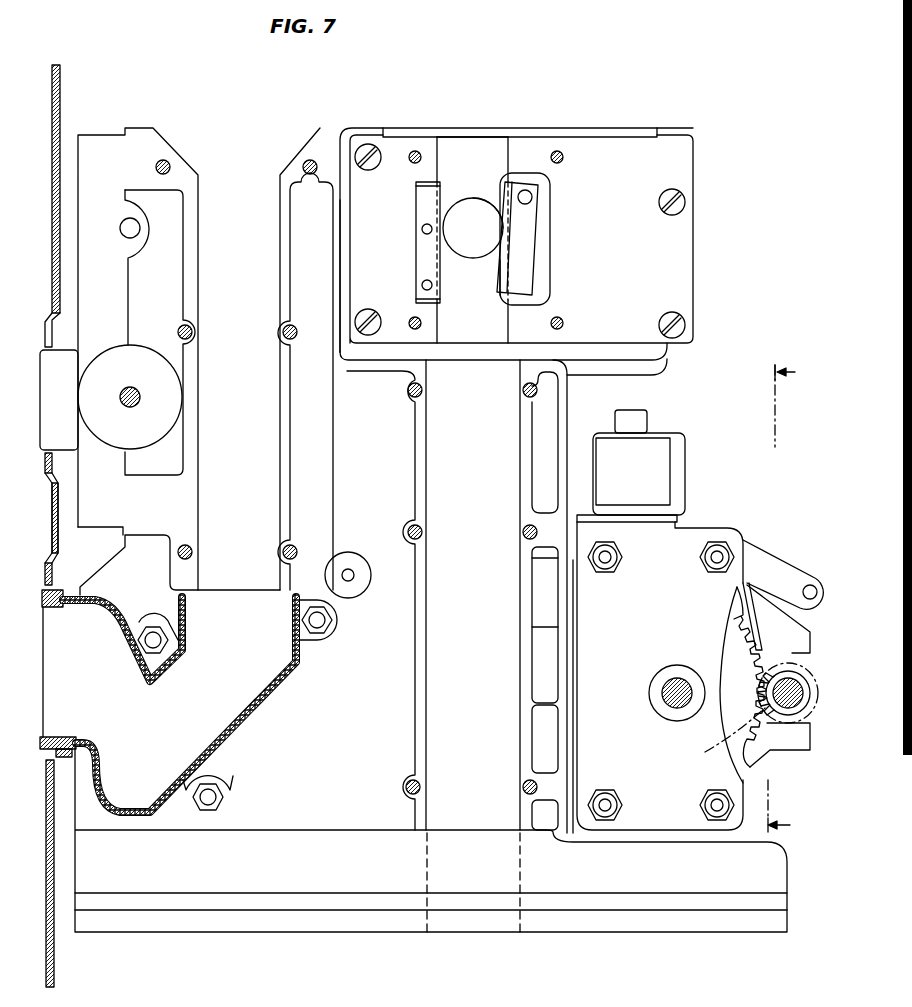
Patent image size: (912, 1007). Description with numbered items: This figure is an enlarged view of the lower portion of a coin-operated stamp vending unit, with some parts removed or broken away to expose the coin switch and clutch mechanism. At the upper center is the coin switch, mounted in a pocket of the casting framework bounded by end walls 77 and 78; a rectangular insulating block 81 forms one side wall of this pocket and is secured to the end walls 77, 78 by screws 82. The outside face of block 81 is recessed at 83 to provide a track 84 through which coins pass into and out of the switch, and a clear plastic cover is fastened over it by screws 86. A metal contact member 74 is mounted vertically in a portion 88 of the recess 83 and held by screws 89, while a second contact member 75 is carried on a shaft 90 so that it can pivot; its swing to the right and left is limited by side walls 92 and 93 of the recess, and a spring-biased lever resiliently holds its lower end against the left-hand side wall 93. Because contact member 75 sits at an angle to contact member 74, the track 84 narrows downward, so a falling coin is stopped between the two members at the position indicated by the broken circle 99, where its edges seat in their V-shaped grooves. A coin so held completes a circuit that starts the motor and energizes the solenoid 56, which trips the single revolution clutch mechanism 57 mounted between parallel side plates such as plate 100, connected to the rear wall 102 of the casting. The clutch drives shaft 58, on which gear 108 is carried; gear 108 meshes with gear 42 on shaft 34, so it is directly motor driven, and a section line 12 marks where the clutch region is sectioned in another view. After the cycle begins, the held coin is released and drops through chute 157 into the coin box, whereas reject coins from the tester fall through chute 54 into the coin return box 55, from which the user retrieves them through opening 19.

The section line 12 is at (795, 600).
The opening 19 is at (68, 685).
The shaft 34 is at (785, 690).
The gear 42 is at (802, 655).
The chute 54 is at (278, 470).
The coin return box 55 is at (252, 725).
The solenoid 56 is at (698, 463).
The clutch mechanism 57 is at (745, 530).
The shaft 58 is at (665, 700).
The contact member 74 is at (428, 198).
The contact member 75 is at (532, 258).
The end wall 77 is at (338, 358).
The end wall 78 is at (672, 360).
The block 81 is at (695, 268).
The screws 82 is at (380, 155).
The recess 83 is at (440, 150).
The track 84 is at (490, 152).
The screws 86 is at (562, 154).
The portion of recess 88 is at (416, 208).
The screws 89 is at (423, 282).
The shaft 90 is at (532, 196).
The side wall 92 is at (552, 292).
The side wall 93 is at (495, 282).
The broken circle 99 is at (490, 192).
The plate 100 is at (593, 630).
The rear wall 102 is at (550, 537).
The gear 108 is at (735, 720).
The chute 157 is at (437, 495).